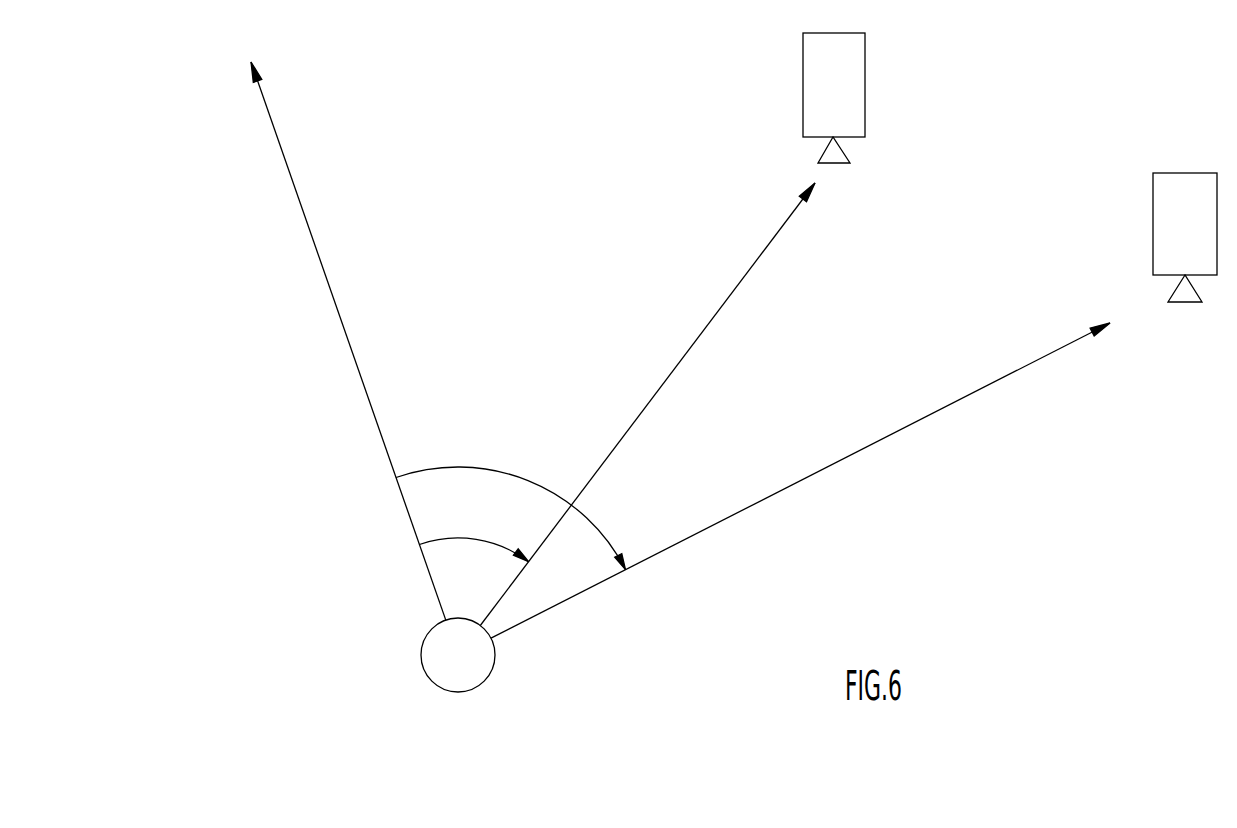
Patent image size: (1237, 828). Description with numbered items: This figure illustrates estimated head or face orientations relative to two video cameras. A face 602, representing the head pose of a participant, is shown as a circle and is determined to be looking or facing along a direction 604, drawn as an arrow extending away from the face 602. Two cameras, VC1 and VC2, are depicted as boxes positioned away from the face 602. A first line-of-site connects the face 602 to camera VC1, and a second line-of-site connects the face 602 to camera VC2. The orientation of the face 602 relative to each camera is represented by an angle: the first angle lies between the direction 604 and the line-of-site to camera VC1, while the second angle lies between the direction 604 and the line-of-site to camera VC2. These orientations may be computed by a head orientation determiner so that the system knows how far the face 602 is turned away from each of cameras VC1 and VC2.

The face 602 is at (422, 663).
The direction 604 is at (296, 192).
The camera VC1 is at (834, 98).
The camera VC2 is at (1185, 237).